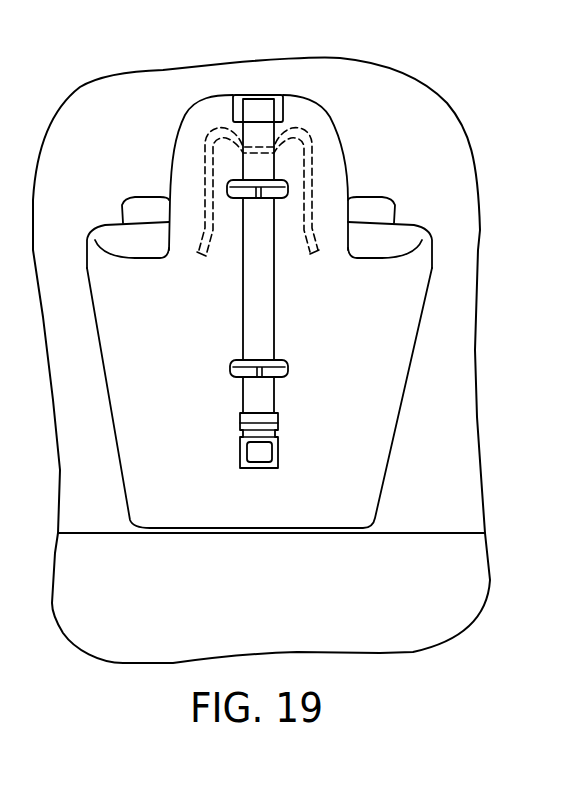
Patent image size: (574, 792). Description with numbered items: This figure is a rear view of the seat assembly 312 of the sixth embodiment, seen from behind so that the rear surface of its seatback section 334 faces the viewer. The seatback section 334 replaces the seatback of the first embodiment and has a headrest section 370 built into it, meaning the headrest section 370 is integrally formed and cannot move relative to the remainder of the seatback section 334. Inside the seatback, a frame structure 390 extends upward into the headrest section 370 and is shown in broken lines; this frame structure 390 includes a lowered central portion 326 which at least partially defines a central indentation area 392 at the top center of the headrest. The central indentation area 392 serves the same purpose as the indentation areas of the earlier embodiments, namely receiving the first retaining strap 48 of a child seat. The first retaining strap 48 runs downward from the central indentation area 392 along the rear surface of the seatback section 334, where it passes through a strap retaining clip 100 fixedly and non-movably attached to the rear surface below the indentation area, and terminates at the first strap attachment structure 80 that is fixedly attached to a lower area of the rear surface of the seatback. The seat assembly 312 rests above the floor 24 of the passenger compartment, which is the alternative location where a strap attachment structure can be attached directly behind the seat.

The floor 24 is at (115, 598).
The seat assembly 312 is at (440, 262).
The seatback section 334 is at (373, 317).
The lowered central portion 326 is at (217, 107).
The central indentation area 392 is at (280, 96).
The first retaining strap 48 is at (257, 298).
The headrest section 370 is at (227, 165).
The frame structure 390 is at (203, 187).
The strap retaining clip 100 is at (280, 187).
The first strap attachment structure 80 is at (238, 457).